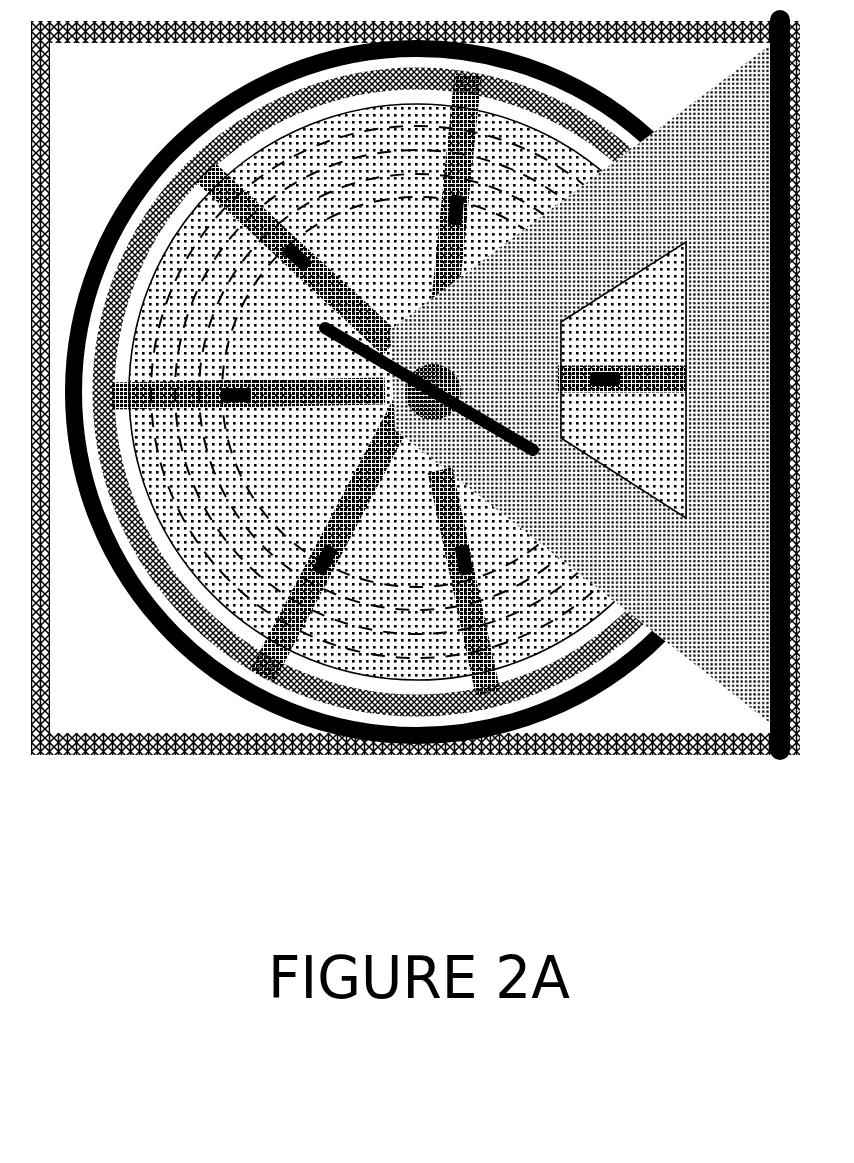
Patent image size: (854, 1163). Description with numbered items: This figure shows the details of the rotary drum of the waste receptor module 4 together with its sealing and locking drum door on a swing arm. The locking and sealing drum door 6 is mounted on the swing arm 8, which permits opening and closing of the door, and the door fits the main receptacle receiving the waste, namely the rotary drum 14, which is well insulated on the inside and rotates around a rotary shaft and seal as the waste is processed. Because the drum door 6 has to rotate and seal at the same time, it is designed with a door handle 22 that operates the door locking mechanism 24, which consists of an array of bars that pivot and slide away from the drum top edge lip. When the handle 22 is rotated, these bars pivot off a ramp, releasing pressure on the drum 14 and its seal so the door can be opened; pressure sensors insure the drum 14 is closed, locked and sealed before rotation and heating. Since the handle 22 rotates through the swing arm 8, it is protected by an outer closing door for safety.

The waste receptor module 4 is at (158, 745).
The sealing drum door 6 is at (378, 650).
The swing arm 8 is at (694, 620).
The rotary drum 14 is at (575, 715).
The door handle 22 is at (518, 460).
The door locking mechanism 24 is at (262, 668).